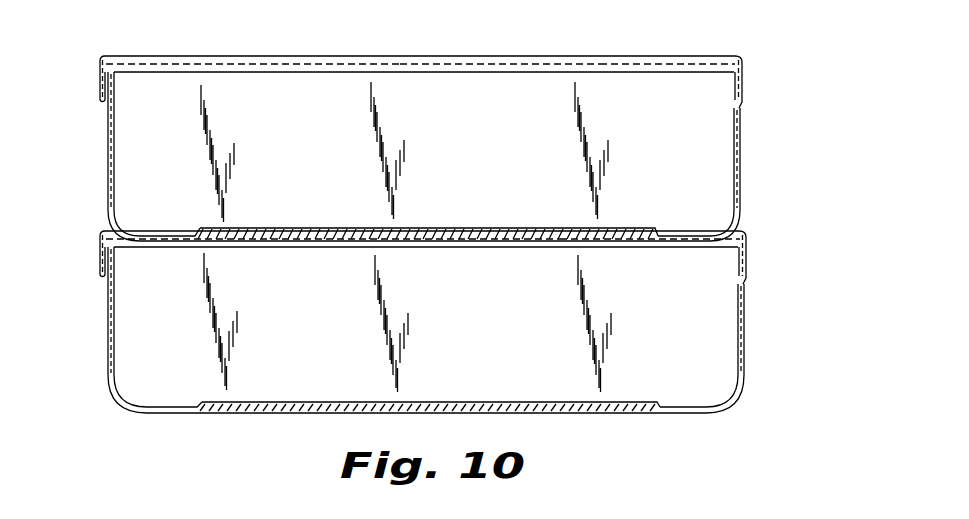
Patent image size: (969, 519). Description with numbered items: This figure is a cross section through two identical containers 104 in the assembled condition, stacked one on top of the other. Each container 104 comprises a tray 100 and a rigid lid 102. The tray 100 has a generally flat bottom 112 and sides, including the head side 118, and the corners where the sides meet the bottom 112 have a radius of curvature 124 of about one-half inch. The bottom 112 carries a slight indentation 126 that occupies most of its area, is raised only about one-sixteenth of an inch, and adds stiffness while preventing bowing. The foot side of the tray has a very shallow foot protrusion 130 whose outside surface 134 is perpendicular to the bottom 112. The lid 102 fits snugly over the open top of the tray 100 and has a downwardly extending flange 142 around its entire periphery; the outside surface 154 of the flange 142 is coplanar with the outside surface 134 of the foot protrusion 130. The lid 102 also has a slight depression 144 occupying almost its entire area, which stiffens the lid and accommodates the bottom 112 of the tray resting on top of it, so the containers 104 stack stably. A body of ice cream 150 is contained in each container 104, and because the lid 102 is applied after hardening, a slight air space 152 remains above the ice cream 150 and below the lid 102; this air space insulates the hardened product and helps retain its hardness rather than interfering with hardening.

The tray 100 is at (718, 182).
The lid 102 is at (215, 57).
The container 104 is at (750, 98).
The bottom 112 is at (160, 236).
The head side 118 is at (113, 300).
The radius of curvature 124 is at (120, 228).
The indentation 126 is at (505, 228).
The foot protrusion 130 is at (742, 368).
The outside surface of the foot protrusion 134 is at (748, 322).
The flange 142 is at (95, 60).
The depression 144 is at (633, 58).
The body of ice cream 150 is at (268, 88).
The air space 152 is at (484, 70).
The outside surface of the flange 154 is at (757, 65).